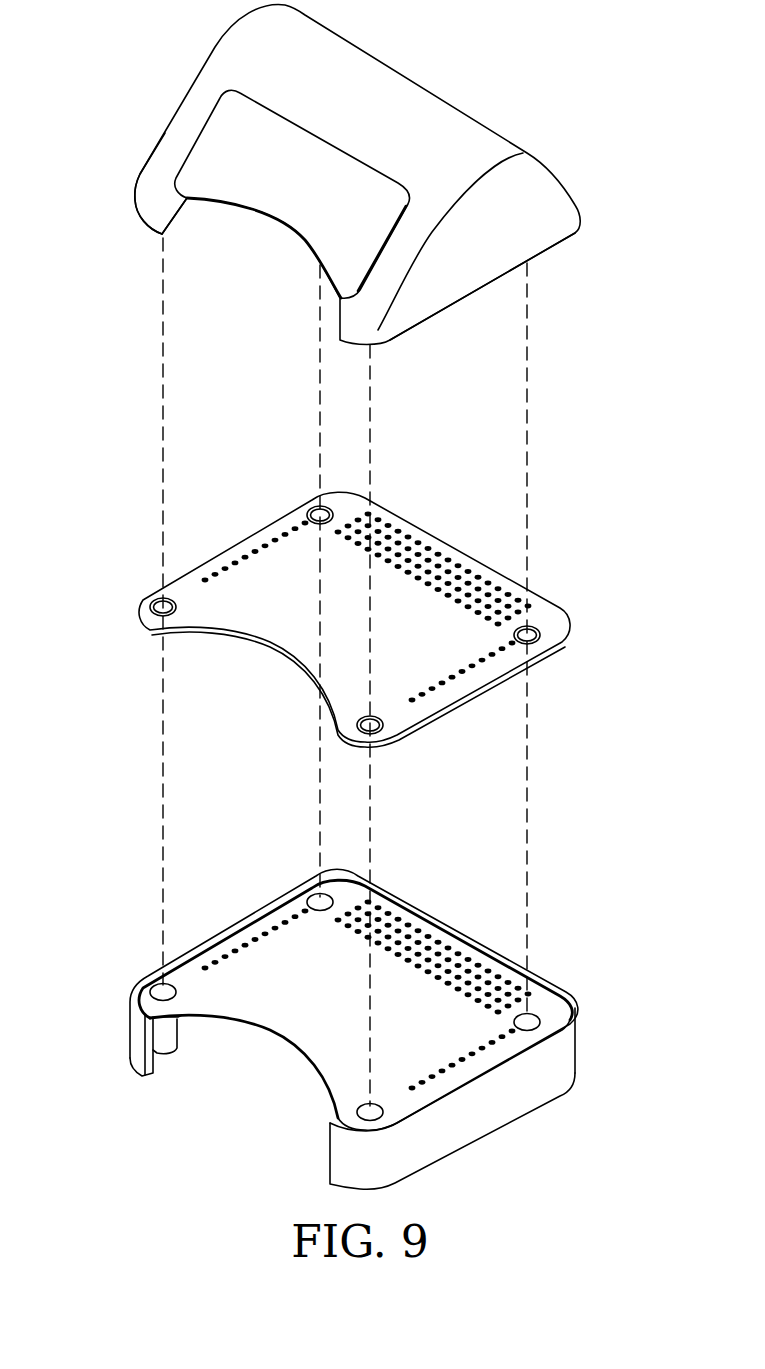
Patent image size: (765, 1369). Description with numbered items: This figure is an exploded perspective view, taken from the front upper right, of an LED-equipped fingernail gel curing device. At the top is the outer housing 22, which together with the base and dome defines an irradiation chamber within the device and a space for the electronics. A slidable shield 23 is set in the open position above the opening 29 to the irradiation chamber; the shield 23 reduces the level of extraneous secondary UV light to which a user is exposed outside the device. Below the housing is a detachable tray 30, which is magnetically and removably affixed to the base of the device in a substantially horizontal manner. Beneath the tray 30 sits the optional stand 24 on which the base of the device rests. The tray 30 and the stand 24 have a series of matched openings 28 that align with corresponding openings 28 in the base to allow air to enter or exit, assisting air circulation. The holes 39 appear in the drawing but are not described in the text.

The outer housing 22 is at (346, 175).
The shield 23 is at (357, 232).
The opening 29 is at (242, 243).
The detachable tray 30 is at (230, 613).
The openings 28 is at (497, 588).
The stand 24 is at (384, 1038).
The mounting holes 39 is at (530, 1012).